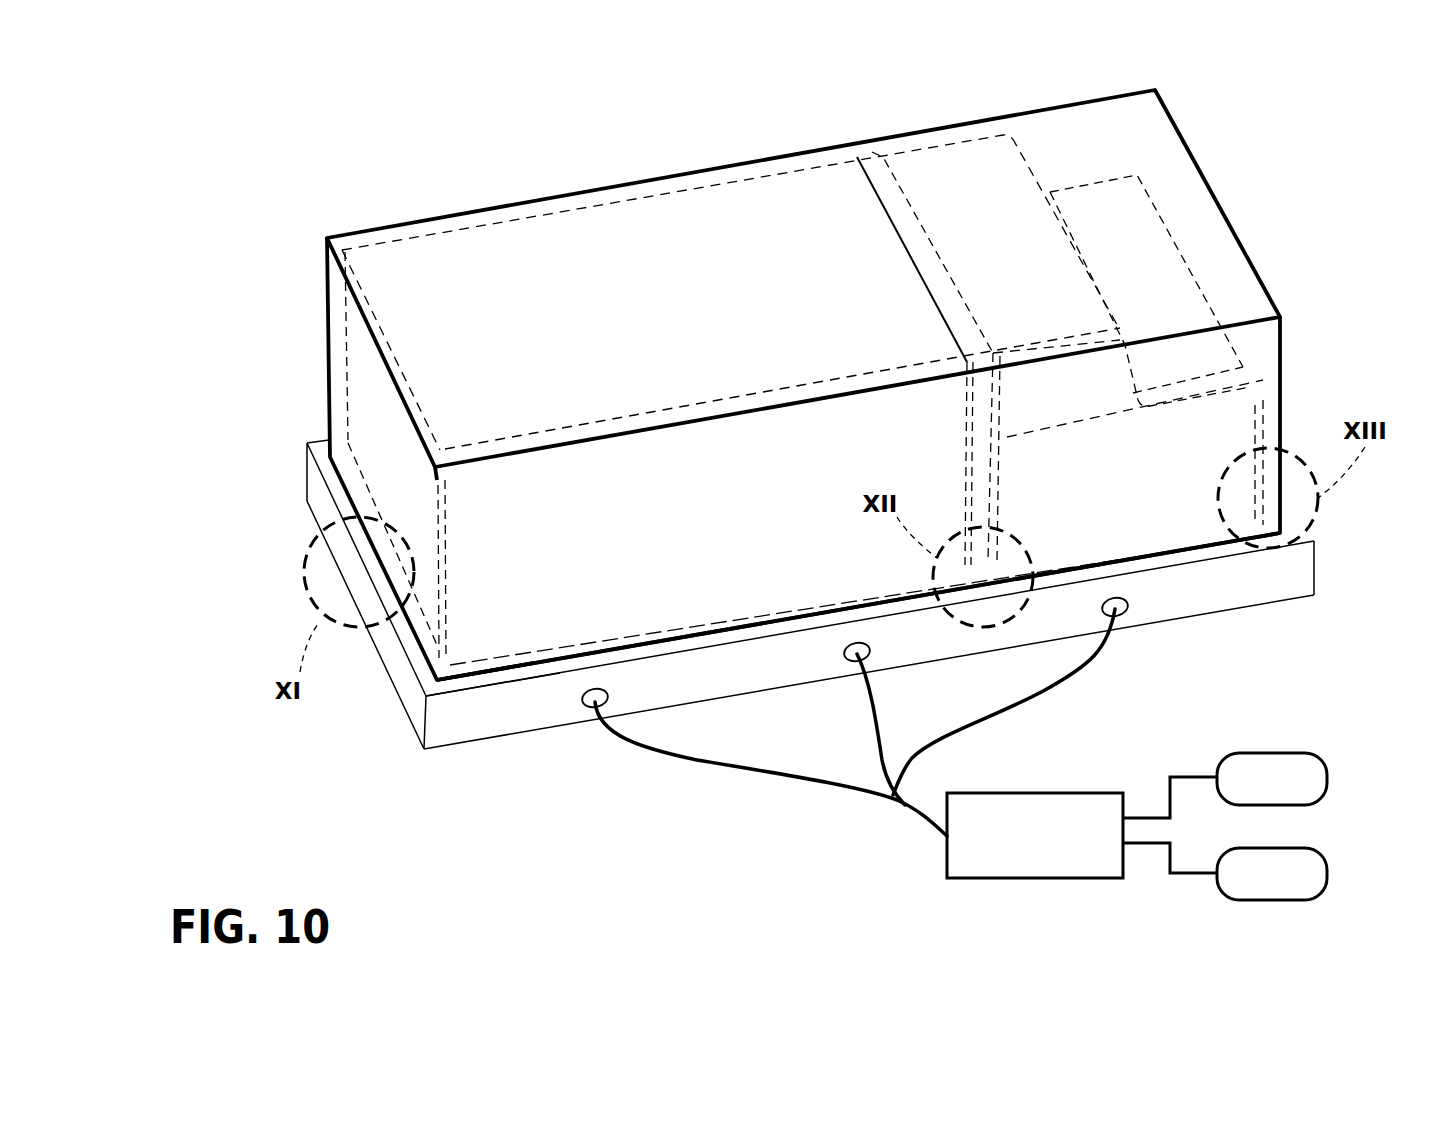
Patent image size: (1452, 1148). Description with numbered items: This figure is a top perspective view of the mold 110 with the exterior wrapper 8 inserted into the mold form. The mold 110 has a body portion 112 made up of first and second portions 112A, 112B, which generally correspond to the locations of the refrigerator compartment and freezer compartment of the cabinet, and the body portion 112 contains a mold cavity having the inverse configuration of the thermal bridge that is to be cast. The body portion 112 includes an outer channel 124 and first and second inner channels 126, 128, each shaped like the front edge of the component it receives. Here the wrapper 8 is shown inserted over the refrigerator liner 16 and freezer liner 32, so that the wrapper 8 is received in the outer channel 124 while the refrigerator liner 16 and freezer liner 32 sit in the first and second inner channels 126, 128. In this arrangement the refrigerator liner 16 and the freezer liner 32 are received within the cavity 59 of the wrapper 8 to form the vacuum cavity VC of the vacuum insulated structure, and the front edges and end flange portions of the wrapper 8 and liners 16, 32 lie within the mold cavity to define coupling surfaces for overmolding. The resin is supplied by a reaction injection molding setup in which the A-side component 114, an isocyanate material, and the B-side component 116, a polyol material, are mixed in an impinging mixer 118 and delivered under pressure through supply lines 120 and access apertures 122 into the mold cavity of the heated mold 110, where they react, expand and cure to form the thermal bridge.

The wrapper 8 is at (552, 170).
The refrigerator liner 16 is at (452, 242).
The freezer liner 32 is at (1057, 166).
The cavity 59 is at (1128, 158).
The vacuum cavity VC is at (862, 148).
The mold 110 is at (266, 303).
The body portion 112 is at (284, 549).
The first portion 112A is at (290, 470).
The second portion 112B is at (1330, 541).
The A-side component 114 is at (1290, 753).
The B-side component 116 is at (1282, 900).
The impinging mixer 118 is at (1035, 878).
The supply lines 120 is at (700, 760).
The access apertures 122 is at (590, 702).
The outer channel 124 is at (540, 667).
The first inner channel 126 is at (533, 658).
The second inner channel 128 is at (1165, 543).